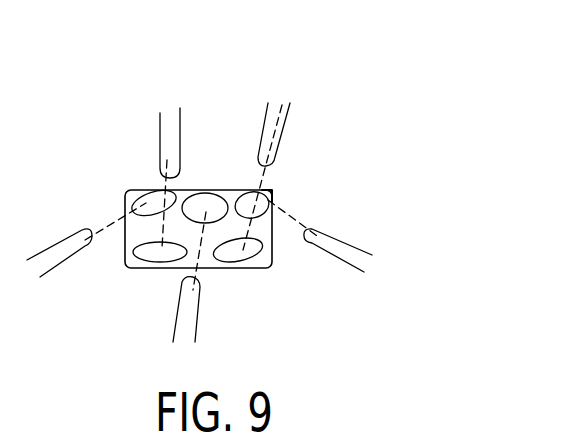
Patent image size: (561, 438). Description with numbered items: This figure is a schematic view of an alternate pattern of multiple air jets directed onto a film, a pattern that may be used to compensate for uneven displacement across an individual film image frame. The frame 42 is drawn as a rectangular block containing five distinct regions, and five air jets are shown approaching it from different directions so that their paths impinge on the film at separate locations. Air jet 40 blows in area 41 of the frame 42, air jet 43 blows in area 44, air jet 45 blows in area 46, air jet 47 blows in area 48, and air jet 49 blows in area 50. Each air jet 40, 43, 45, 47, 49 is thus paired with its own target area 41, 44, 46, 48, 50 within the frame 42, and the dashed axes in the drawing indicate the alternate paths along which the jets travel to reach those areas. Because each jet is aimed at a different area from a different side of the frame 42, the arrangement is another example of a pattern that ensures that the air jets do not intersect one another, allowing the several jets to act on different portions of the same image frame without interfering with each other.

The air jet 40 is at (201, 308).
The area 41 is at (206, 193).
The frame 42 is at (278, 201).
The air jet 43 is at (288, 121).
The area 44 is at (255, 252).
The air jet 45 is at (158, 140).
The area 46 is at (155, 260).
The air jet 47 is at (55, 268).
The area 48 is at (137, 192).
The air jet 49 is at (347, 240).
The area 50 is at (272, 194).